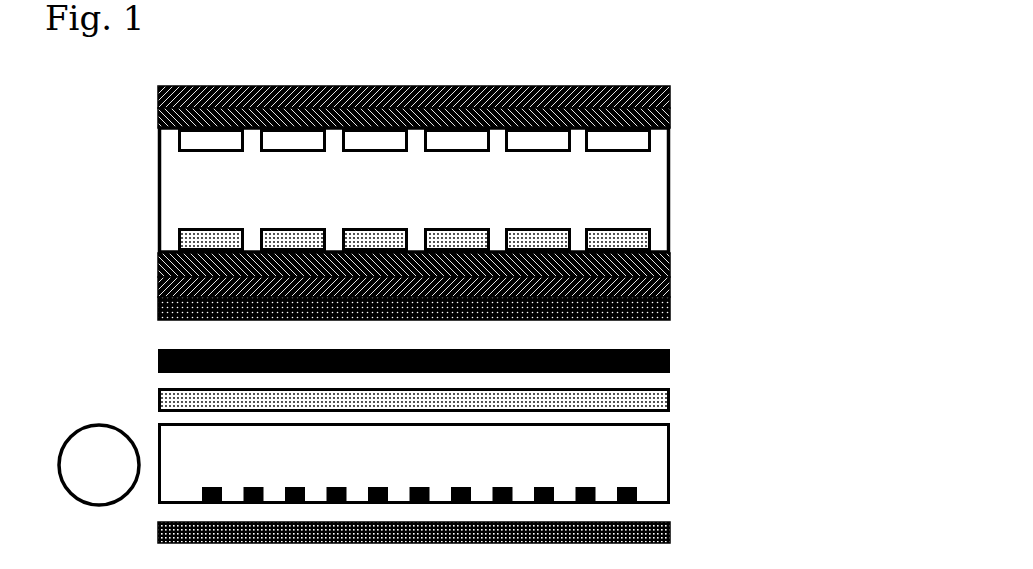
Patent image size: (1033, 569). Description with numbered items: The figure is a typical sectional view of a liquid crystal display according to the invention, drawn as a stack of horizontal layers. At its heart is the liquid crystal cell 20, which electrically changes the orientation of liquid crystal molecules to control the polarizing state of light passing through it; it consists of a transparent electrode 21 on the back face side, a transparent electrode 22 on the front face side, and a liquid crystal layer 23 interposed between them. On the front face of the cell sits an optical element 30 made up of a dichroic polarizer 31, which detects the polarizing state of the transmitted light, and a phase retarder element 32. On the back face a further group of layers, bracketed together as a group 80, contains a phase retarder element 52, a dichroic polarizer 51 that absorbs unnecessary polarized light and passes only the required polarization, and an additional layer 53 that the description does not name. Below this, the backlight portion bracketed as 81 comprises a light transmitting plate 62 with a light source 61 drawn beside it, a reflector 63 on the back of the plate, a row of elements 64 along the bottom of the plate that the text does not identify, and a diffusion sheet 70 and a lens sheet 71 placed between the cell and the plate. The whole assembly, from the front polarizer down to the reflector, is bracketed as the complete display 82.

The liquid crystal cell 20 is at (140, 130).
The transparent electrode 21 is at (650, 242).
The transparent electrode 22 is at (670, 138).
The liquid crystal layer 23 is at (648, 190).
The optical element 30 is at (140, 88).
The dichroic polarizer 31 is at (669, 95).
The phase retarder element 32 is at (669, 117).
The dichroic polarizer 51 is at (670, 287).
The phase retarder element 52 is at (670, 273).
The reflective polarizer 53 is at (672, 312).
The light source 61 is at (80, 428).
The light transmitting plate 62 is at (670, 463).
The reflector 63 is at (670, 532).
The light-scattering dots 64 is at (198, 492).
The diffusion sheet 70 is at (670, 400).
The lens sheet 71 is at (670, 362).
The lower optical film laminate 80 is at (140, 273).
The backlight unit 81 is at (790, 252).
The liquid crystal display device 82 is at (850, 63).